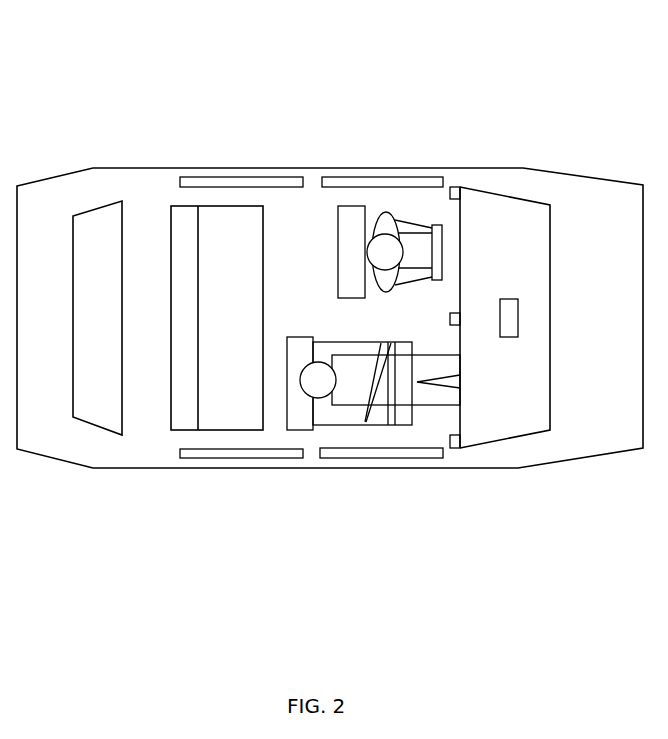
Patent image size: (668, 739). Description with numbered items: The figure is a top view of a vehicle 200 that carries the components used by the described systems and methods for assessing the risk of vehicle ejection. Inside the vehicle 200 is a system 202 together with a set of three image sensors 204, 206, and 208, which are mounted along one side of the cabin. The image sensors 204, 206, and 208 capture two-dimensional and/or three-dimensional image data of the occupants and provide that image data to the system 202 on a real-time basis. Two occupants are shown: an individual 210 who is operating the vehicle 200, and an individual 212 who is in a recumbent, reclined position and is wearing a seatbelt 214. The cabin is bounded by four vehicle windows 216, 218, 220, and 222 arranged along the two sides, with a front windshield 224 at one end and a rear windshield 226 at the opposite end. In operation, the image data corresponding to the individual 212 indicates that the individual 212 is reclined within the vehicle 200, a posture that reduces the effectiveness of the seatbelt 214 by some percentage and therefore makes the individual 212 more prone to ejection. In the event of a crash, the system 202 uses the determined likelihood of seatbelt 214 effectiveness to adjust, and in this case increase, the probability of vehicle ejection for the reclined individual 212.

The vehicle 200 is at (462, 81).
The system 202 is at (516, 337).
The image sensor 204 is at (455, 435).
The image sensor 206 is at (455, 313).
The image sensor 208 is at (455, 187).
The individual 210 is at (432, 278).
The individual 212 is at (347, 355).
The seatbelt 214 is at (365, 422).
The vehicle window 216 is at (330, 458).
The vehicle window 218 is at (190, 458).
The vehicle window 220 is at (190, 177).
The vehicle window 222 is at (333, 177).
The front windshield 224 is at (550, 205).
The rear windshield 226 is at (73, 215).